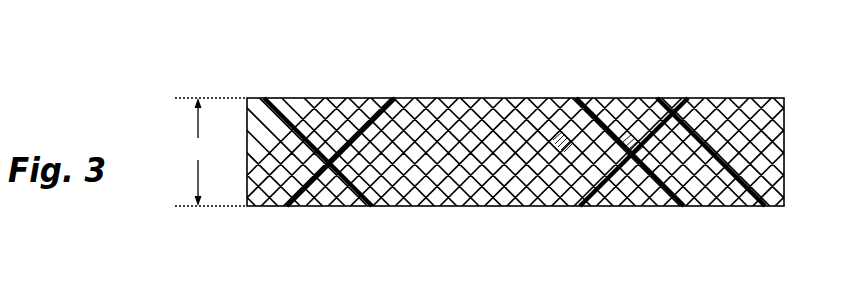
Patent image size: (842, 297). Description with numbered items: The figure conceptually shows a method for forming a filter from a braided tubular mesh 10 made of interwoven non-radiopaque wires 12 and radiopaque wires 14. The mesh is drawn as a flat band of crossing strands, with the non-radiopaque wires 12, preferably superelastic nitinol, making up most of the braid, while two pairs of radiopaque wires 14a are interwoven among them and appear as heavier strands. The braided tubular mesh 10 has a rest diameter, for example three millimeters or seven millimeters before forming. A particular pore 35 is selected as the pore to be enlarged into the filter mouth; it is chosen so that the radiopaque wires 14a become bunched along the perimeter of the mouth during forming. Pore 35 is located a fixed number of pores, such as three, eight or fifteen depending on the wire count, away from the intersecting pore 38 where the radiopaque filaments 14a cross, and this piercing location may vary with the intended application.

The braided tubular mesh 10 is at (691, 61).
The non-radiopaque wires 12 is at (492, 98).
The radiopaque wires 14 is at (296, 206).
The radiopaque wires 14a is at (592, 206).
The pore 35 is at (555, 135).
The intersecting pore 38 is at (618, 132).